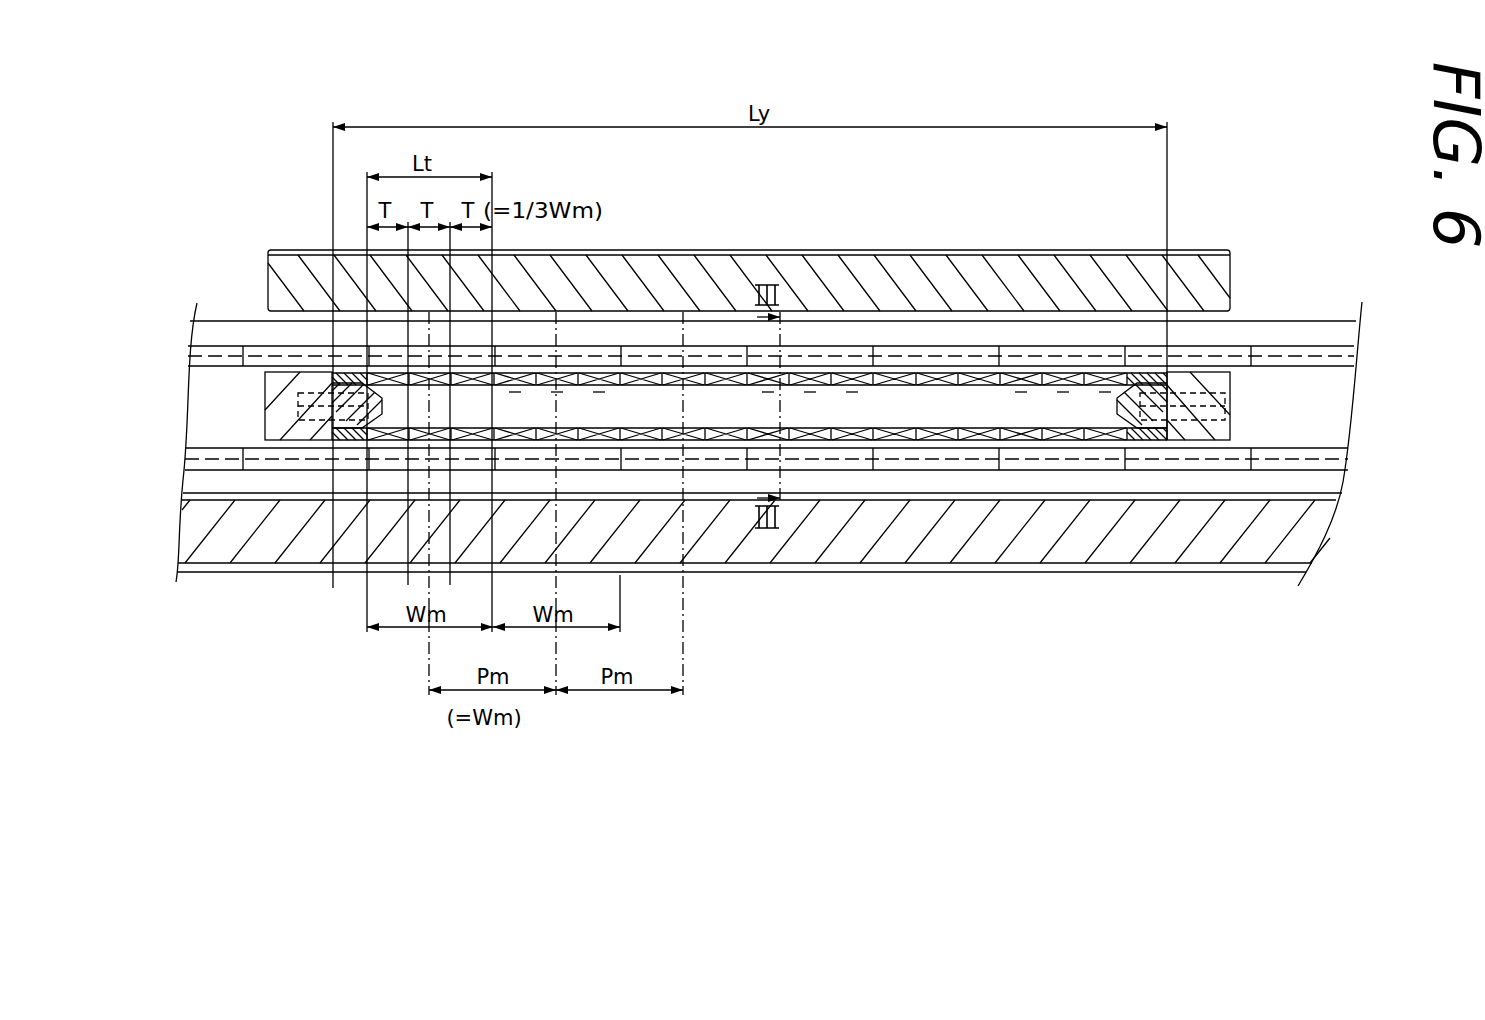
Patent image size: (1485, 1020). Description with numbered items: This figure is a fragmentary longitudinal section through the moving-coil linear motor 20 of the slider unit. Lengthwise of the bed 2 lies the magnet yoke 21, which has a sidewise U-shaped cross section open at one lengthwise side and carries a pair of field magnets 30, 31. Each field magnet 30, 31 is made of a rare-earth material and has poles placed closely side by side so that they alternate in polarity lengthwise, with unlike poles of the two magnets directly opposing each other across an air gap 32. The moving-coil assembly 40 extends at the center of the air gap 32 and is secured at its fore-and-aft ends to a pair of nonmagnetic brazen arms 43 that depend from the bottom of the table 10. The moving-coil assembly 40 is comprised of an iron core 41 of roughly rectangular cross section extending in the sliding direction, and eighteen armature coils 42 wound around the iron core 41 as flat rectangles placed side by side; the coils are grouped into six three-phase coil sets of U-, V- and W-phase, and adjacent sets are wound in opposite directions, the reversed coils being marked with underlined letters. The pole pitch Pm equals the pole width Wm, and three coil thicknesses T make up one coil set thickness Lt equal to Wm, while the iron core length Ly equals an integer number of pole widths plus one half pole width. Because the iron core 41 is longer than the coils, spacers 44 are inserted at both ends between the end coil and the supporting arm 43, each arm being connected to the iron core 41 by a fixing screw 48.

The bed 2 is at (738, 547).
The table 10 is at (887, 280).
The moving-coil linear motor 20 is at (1185, 190).
The magnet yoke 21 is at (1252, 478).
The field magnet 30 is at (1286, 345).
The field magnet 31 is at (1281, 466).
The air gap 32 is at (731, 445).
The moving-coil assembly 40 is at (838, 452).
The iron core 41 is at (881, 405).
The armature coils 42 is at (983, 437).
The nonmagnetic arm 43 is at (1140, 606).
The spacer 44 is at (1102, 643).
The fixing screw 48 is at (267, 388).